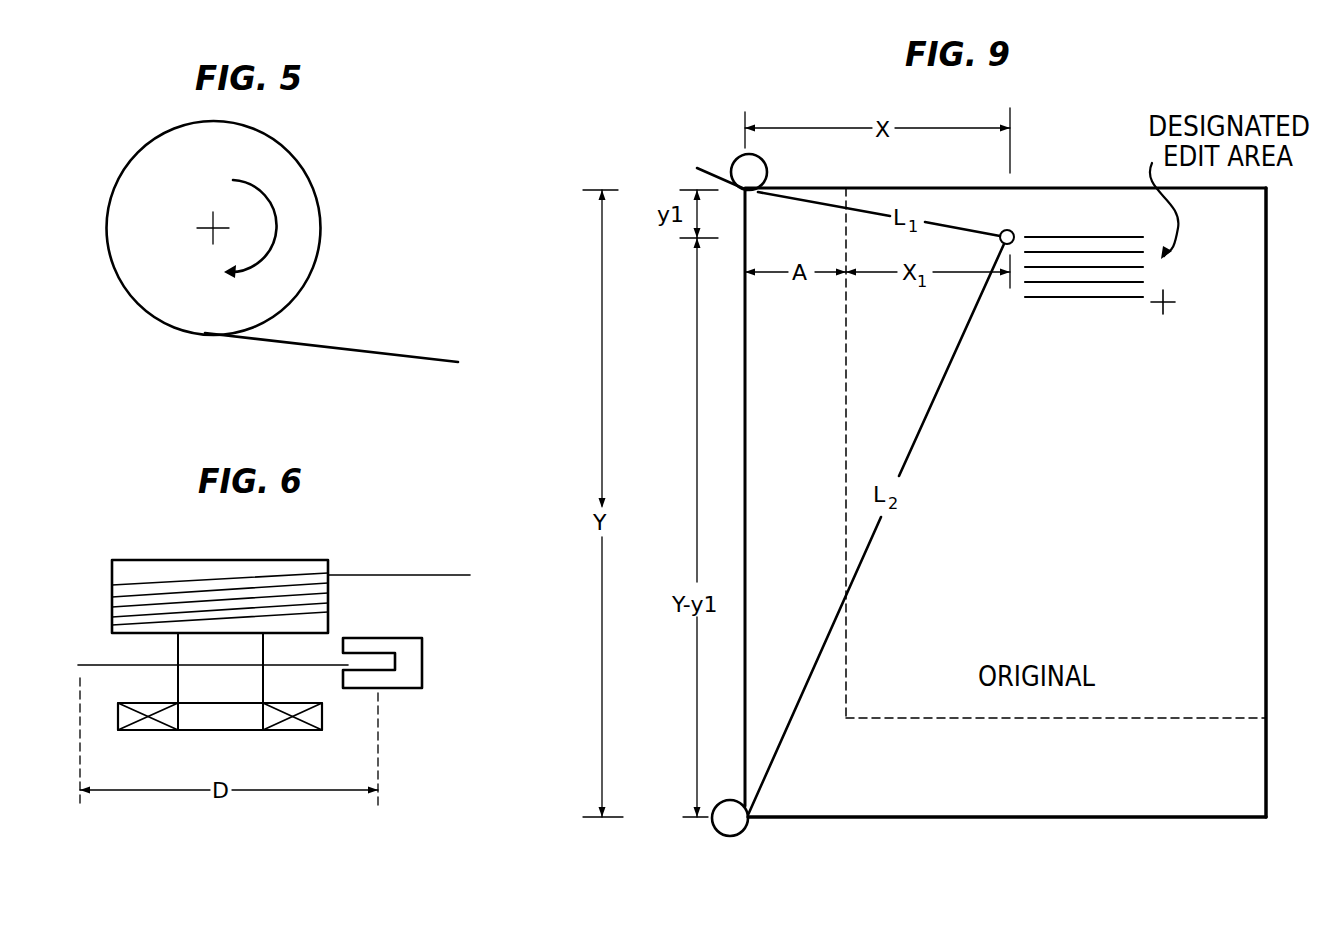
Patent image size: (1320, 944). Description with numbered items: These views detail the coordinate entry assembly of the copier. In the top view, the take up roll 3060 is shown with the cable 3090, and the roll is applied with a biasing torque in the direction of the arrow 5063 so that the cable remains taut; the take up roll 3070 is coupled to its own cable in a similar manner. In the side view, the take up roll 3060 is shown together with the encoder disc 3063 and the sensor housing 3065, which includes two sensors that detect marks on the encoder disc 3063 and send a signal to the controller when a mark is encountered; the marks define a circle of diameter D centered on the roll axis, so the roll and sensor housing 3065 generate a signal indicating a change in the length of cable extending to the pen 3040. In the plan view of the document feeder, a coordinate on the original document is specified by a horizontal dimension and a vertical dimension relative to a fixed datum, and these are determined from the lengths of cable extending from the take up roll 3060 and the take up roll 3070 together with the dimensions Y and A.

In FIG. 5, the take up roll 3060 is at (107, 218).
In FIG. 6, the take up roll 3060 is at (204, 560).
In FIG. 9, the take up roll 3060 is at (733, 162).
In FIG. 5, the arrow 5063 is at (276, 243).
In FIG. 5, the cable 3090 is at (315, 342).
In FIG. 6, the cable 3090 is at (405, 575).
In FIG. 6, the encoder disc 3063 is at (108, 663).
In FIG. 6, the sensor housing 3065 is at (395, 638).
In FIG. 9, the pen 3040 is at (1013, 229).
In FIG. 9, the take up roll 3070 is at (735, 837).